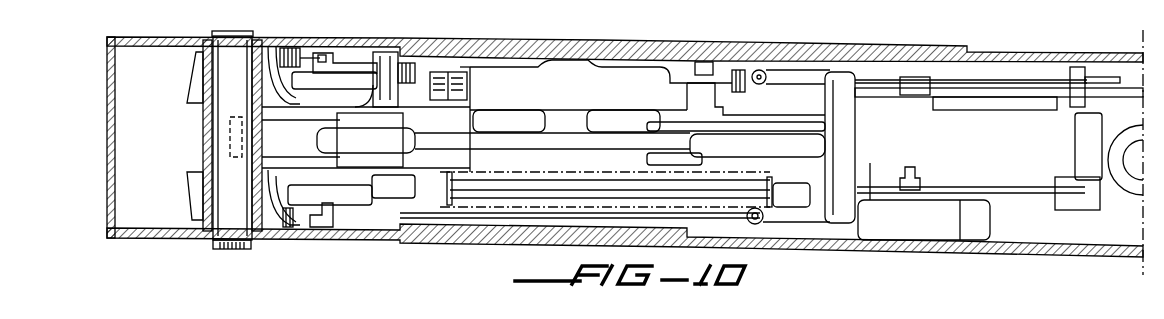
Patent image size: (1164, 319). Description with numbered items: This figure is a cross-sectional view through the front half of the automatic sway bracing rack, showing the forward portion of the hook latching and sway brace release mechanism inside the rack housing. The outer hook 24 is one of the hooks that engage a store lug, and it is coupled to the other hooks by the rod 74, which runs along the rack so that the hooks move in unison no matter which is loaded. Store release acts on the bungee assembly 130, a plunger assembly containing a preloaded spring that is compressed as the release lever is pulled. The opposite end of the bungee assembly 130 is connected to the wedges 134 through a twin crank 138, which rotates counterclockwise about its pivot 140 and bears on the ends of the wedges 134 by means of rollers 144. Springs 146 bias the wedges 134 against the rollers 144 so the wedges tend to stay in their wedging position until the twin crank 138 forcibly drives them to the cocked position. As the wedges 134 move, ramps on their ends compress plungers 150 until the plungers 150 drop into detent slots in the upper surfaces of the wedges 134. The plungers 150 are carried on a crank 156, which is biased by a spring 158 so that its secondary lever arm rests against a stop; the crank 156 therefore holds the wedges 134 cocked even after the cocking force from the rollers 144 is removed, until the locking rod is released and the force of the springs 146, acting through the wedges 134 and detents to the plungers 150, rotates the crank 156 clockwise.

The outer hook 24 is at (305, 153).
The rod 74 is at (427, 138).
The bungee assembly 130 is at (490, 207).
The wedges 134 is at (350, 62).
The twin crank 138 is at (357, 78).
The pivot 140 is at (410, 36).
The rollers 144 is at (268, 48).
The springs 146 is at (297, 49).
The plungers 150 is at (762, 70).
The crank 156 is at (807, 77).
The spring 158 is at (735, 72).